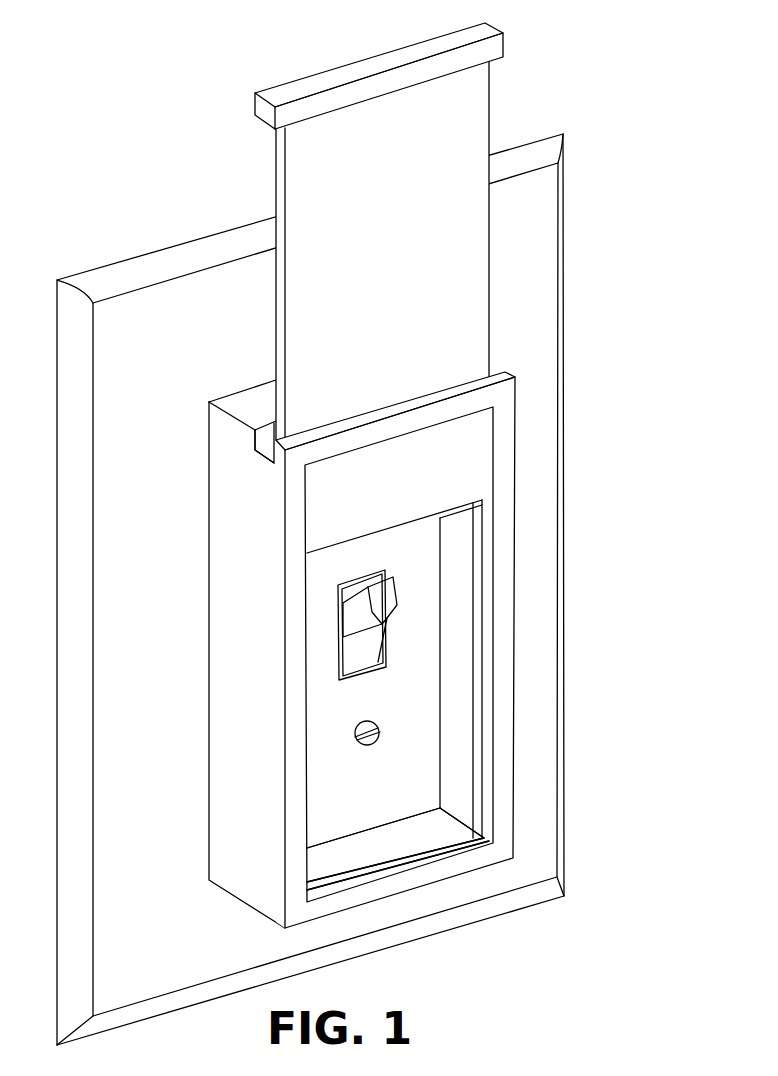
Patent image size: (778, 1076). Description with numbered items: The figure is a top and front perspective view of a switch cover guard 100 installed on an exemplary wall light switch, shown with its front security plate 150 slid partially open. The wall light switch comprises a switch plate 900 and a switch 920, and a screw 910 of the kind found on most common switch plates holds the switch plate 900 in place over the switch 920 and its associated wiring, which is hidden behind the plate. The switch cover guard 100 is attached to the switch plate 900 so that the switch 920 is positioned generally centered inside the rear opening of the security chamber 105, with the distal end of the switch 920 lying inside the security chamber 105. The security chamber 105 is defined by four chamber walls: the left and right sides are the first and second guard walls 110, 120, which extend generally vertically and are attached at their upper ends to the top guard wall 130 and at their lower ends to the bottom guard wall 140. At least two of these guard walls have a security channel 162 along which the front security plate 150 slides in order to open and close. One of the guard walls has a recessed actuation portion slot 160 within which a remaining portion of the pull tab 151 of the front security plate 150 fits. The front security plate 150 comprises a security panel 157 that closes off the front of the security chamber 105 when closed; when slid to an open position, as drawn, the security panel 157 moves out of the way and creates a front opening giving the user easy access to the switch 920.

The switch cover guard 100 is at (570, 968).
The security chamber 105 is at (352, 875).
The first guard wall 110 is at (257, 700).
The second guard wall 120 is at (503, 623).
The top guard wall 130 is at (253, 405).
The bottom guard wall 140 is at (375, 853).
The front security plate 150 is at (193, 139).
The pull tab 151 is at (337, 72).
The security panel 157 is at (298, 182).
The recessed actuation portion slot 160 is at (227, 467).
The security channel 162 is at (478, 708).
The switch plate 900 is at (528, 216).
The screw 910 is at (380, 737).
The switch 920 is at (382, 595).